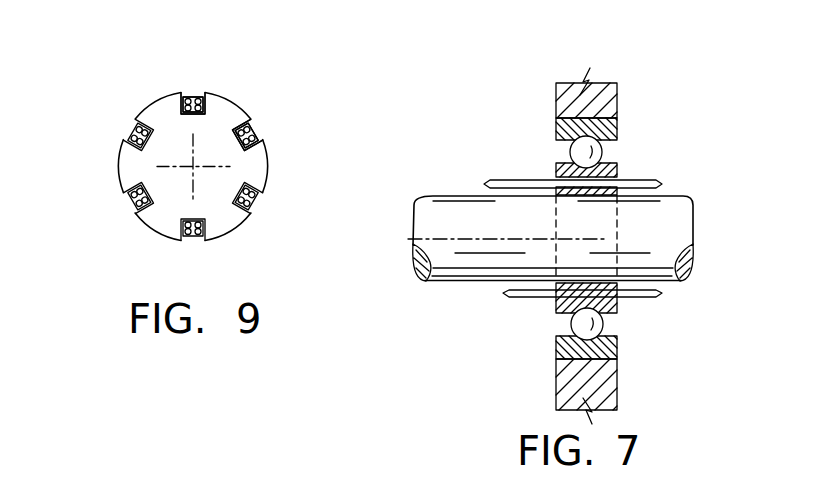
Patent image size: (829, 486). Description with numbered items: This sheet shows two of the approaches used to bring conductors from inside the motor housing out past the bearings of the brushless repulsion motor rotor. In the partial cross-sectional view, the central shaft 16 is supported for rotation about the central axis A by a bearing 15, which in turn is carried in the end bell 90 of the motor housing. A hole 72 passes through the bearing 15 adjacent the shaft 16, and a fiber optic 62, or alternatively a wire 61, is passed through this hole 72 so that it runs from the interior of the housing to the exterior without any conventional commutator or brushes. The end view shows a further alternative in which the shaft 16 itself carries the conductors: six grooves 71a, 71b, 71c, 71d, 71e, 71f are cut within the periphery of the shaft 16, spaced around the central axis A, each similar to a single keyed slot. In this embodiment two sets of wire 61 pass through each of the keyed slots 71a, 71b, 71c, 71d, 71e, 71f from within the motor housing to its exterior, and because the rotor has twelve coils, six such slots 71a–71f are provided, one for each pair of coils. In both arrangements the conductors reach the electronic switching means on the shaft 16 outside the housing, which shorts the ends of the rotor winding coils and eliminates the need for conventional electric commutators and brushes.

In FIG. 9, the central shaft 16 is at (118, 173).
In FIG. 7, the central shaft 16 is at (458, 197).
In FIG. 9, the wire 61 is at (198, 96).
In FIG. 9, the groove 71a is at (186, 97).
In FIG. 9, the groove 71b is at (135, 125).
In FIG. 9, the groove 71c is at (130, 193).
In FIG. 9, the groove 71d is at (187, 237).
In FIG. 9, the groove 71e is at (260, 193).
In FIG. 9, the groove 71f is at (252, 125).
In FIG. 9, the central axis A is at (193, 166).
In FIG. 7, the central axis A is at (470, 239).
In FIG. 7, the end bell 90 is at (605, 92).
In FIG. 7, the bearing 15 is at (608, 133).
In FIG. 7, the hole 72 is at (617, 173).
In FIG. 7, the fiber optic 62 is at (533, 178).